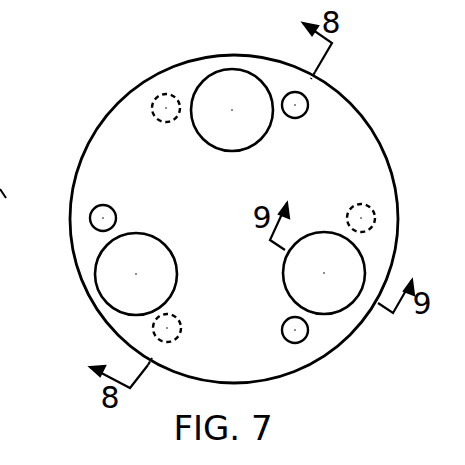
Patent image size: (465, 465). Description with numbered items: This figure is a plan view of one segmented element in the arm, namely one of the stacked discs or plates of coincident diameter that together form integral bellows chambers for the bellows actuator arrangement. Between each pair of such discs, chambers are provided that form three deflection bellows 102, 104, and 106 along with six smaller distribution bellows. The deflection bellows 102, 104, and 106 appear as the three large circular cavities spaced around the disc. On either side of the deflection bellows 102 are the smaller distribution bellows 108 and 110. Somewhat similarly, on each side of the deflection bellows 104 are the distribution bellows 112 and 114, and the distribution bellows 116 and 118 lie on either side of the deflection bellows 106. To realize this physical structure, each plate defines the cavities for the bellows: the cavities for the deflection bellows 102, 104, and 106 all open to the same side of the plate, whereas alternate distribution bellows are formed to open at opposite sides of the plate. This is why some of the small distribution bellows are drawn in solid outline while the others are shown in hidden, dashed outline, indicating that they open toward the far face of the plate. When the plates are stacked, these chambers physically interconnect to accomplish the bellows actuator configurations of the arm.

The deflection bellows 102 is at (161, 241).
The deflection bellows 104 is at (259, 141).
The deflection bellows 106 is at (283, 273).
The distribution bellows 108 is at (94, 227).
The distribution bellows 110 is at (153, 330).
The distribution bellows 112 is at (156, 97).
The distribution bellows 114 is at (307, 110).
The distribution bellows 116 is at (373, 211).
The distribution bellows 118 is at (302, 341).